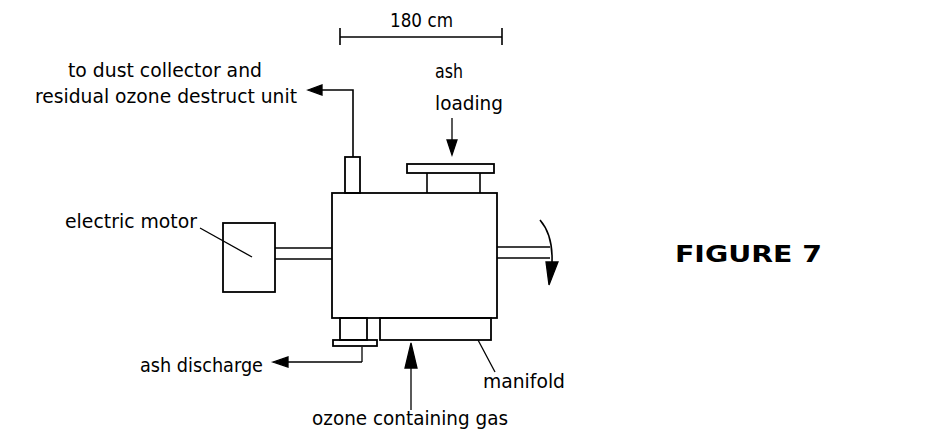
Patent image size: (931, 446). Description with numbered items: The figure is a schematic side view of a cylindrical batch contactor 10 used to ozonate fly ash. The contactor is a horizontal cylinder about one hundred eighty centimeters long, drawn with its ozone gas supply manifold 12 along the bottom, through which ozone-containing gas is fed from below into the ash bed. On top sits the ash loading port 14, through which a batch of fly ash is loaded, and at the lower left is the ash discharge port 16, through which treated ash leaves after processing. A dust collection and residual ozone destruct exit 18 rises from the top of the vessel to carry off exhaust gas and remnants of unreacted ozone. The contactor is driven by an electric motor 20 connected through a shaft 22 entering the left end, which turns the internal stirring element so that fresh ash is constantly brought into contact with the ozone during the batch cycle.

The cylindrical batch contactor 10 is at (497, 213).
The ozone gas supply manifold 12 is at (497, 328).
The ash loading port 14 is at (468, 163).
The ash discharge port 16 is at (330, 330).
The dust collection and residual ozone destruct exit 18 is at (361, 172).
The electric motor 20 is at (248, 222).
The shaft 22 is at (304, 247).